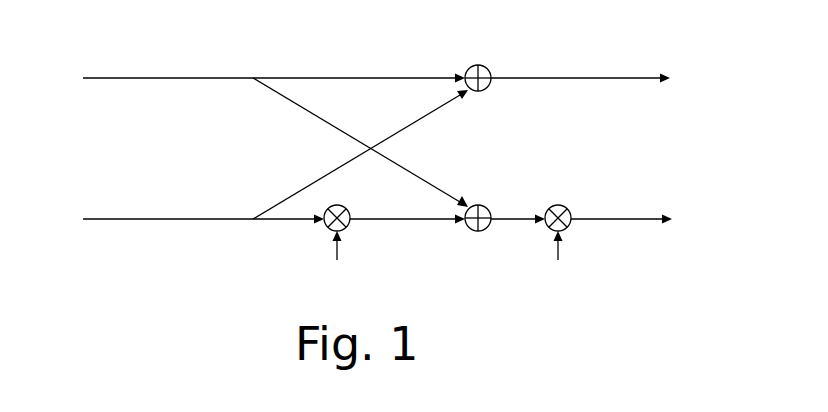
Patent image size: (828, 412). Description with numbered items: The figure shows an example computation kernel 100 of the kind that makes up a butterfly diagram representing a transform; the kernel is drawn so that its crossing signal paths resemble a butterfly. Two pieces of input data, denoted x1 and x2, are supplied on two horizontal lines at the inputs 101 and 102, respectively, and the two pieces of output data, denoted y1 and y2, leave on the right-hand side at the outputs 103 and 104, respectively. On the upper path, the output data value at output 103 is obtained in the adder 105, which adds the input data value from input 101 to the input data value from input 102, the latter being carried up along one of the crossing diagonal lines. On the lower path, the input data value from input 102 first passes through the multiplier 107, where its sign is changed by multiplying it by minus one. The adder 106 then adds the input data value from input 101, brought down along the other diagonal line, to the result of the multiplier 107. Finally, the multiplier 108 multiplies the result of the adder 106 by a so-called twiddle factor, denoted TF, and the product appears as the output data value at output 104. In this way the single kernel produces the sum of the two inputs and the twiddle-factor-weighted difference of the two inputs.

The computation kernel 100 is at (178, 32).
The input 101 is at (137, 78).
The input 102 is at (137, 219).
The output 103 is at (647, 80).
The output 104 is at (637, 220).
The adder 105 is at (471, 67).
The adder 106 is at (481, 232).
The multiplier 107 is at (351, 227).
The multiplier 108 is at (553, 206).